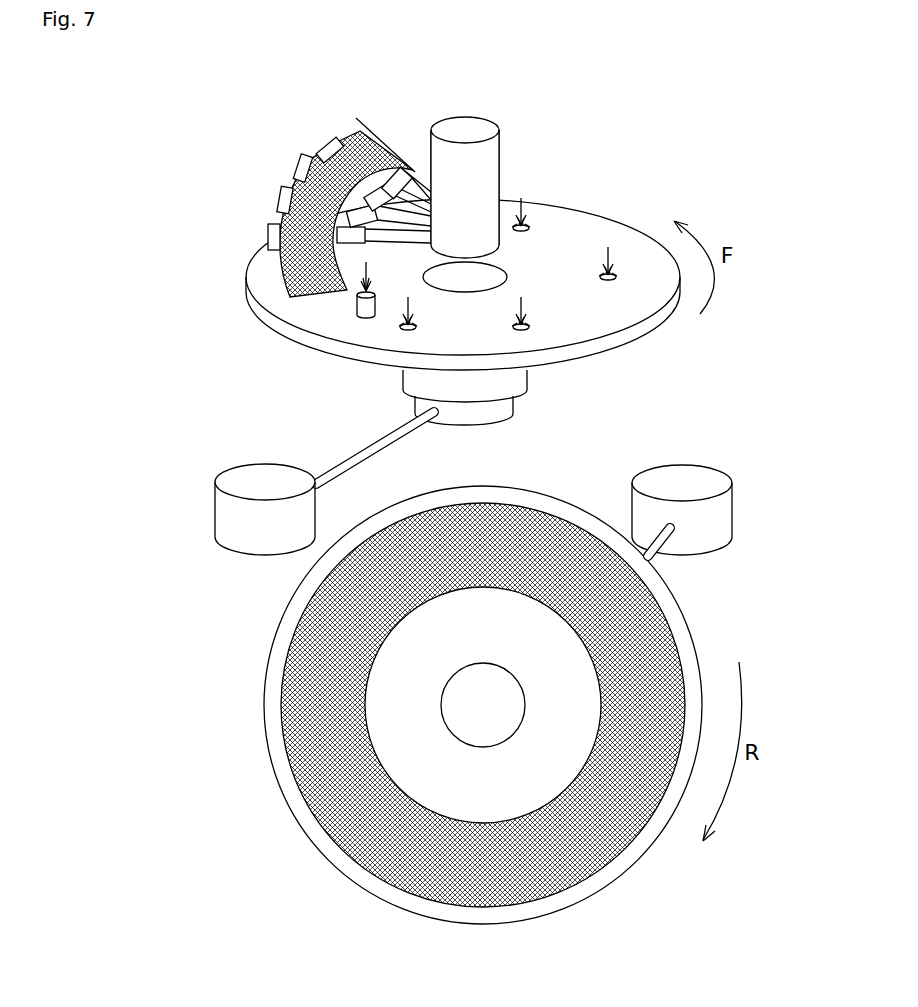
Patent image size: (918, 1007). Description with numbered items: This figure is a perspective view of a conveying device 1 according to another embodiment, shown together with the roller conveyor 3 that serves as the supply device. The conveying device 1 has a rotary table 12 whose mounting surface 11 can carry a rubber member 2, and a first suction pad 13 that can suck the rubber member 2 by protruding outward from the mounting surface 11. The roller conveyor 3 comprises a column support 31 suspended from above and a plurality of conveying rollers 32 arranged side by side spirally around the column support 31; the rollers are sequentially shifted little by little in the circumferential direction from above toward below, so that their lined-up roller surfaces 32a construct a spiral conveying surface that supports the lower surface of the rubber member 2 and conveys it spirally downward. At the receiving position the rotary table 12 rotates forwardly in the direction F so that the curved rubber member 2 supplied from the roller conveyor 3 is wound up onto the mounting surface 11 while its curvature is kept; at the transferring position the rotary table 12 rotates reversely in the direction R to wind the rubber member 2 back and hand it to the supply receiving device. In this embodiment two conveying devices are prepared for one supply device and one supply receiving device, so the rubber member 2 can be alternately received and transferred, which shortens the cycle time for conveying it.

The conveying device 1 is at (562, 397).
The rubber member 2 is at (270, 270).
The roller conveyor 3 is at (510, 151).
The mounting surface 11 is at (327, 313).
The rotary table 12 is at (303, 343).
The first suction pad 13 is at (357, 303).
The column support 31 is at (500, 197).
The conveying rollers 32 is at (321, 171).
The roller surfaces 32a is at (280, 197).